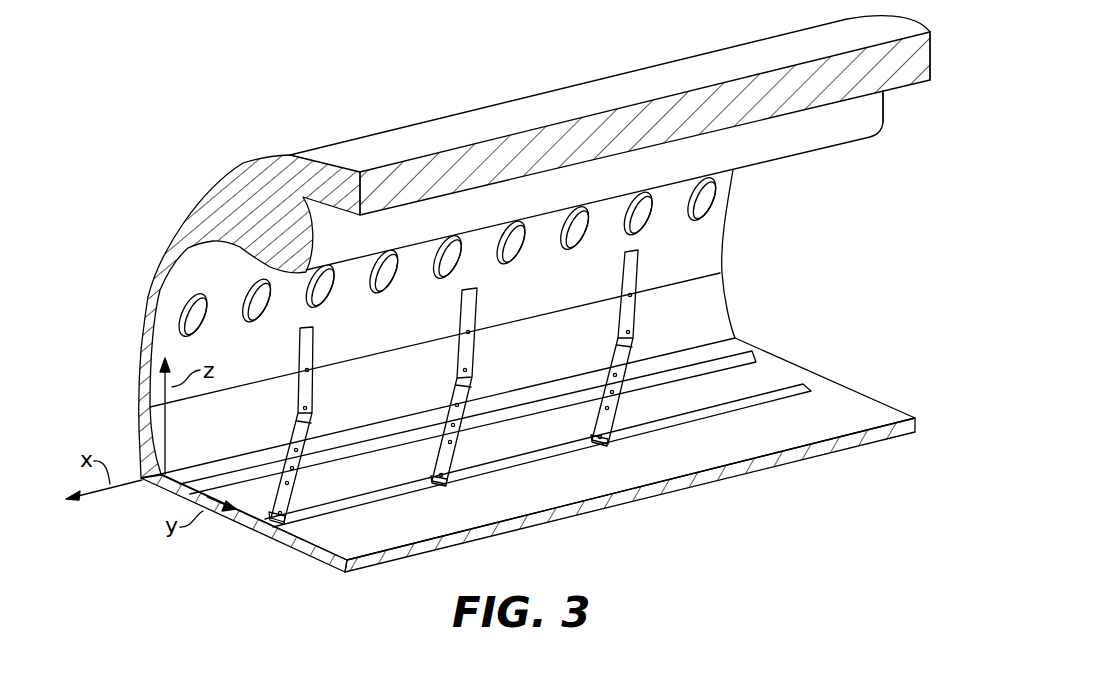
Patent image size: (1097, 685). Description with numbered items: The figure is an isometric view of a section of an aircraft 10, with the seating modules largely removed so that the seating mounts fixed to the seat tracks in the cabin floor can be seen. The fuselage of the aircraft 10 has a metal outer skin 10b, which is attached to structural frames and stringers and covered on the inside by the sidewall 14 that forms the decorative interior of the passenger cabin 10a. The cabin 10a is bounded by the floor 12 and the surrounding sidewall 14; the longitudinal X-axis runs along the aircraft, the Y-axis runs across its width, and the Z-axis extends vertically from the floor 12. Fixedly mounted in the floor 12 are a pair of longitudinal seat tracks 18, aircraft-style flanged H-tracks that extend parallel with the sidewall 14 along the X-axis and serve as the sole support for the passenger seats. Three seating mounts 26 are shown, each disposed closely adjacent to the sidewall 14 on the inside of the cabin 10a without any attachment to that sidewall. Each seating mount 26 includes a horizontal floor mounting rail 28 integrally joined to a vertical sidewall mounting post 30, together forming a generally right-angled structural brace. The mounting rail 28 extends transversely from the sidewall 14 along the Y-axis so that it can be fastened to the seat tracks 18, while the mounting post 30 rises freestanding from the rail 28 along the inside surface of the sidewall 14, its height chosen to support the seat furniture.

The aircraft 10 is at (458, 110).
The passenger cabin 10a is at (913, 87).
The metal outer skin 10b is at (140, 345).
The floor 12 is at (866, 412).
The sidewall 14 is at (444, 312).
The seat tracks 18 is at (750, 355).
The seating mount 26 is at (328, 338).
The floor mounting rail 28 is at (300, 492).
The sidewall mounting post 30 is at (313, 390).